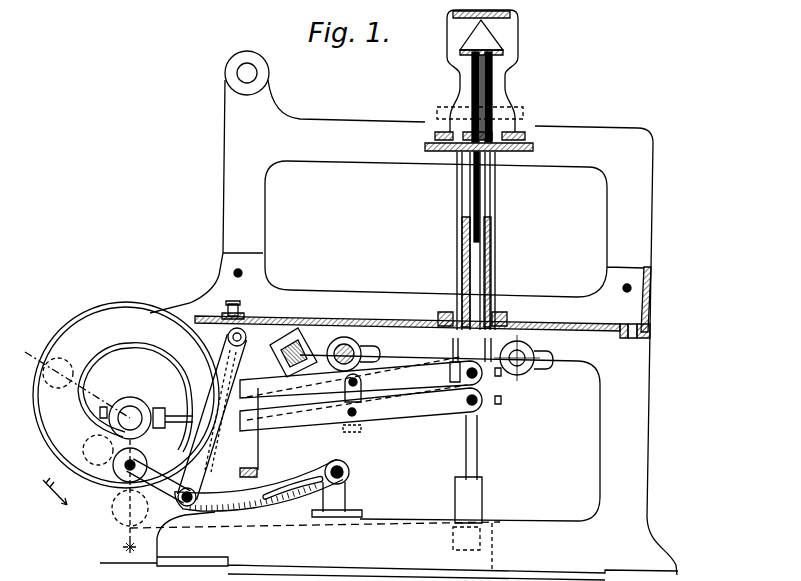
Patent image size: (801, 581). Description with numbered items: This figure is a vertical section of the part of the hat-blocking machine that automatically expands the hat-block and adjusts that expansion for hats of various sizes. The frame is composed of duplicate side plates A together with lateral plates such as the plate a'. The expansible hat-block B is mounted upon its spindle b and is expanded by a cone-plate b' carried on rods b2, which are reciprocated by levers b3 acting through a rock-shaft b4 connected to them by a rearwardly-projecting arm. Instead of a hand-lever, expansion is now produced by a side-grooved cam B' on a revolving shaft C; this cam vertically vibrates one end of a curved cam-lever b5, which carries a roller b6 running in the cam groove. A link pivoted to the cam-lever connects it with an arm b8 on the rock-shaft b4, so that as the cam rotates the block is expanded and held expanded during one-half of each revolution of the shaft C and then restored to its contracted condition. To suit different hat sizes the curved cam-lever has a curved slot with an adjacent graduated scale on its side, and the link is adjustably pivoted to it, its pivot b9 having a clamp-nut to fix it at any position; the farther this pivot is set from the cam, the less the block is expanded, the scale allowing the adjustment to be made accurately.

The side plates A is at (389, 315).
The expansible hat-block B is at (472, 75).
The side-grooved cam B' is at (122, 405).
The revolving shaft C is at (146, 475).
The lateral plate a' is at (422, 319).
The spindle b is at (478, 311).
The cone-plate b' is at (472, 137).
The rods b2 is at (495, 184).
The levers b3 is at (370, 394).
The rock-shaft b4 is at (338, 345).
The curved cam-lever b5 is at (135, 468).
The roller b6 is at (117, 481).
The arm b8 is at (272, 342).
The pivot b9 is at (190, 503).